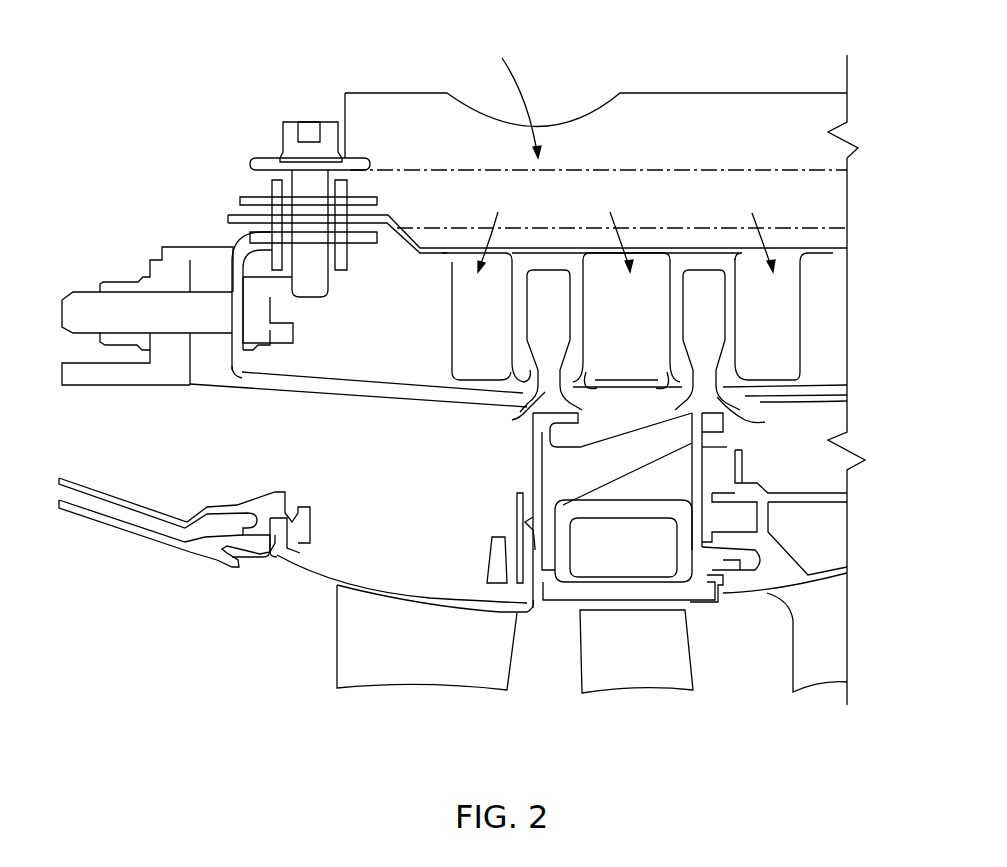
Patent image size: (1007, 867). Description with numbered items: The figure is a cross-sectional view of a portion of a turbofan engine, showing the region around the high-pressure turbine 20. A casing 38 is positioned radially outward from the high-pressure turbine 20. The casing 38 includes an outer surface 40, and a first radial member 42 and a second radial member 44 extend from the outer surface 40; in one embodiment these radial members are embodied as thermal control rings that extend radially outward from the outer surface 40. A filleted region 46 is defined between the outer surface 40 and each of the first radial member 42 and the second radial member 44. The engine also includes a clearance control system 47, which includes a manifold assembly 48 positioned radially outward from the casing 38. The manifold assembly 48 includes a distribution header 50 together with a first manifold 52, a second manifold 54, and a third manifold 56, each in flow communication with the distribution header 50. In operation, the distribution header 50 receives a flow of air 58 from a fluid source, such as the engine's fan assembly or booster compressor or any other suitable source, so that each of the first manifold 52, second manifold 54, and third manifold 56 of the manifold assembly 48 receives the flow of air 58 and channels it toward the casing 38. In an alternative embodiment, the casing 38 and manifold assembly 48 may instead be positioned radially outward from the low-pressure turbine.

The high-pressure turbine 20 is at (355, 711).
The casing 38 is at (300, 383).
The outer surface 40 is at (373, 380).
The first radial member 42 is at (545, 288).
The second radial member 44 is at (703, 288).
The filleted region 46 is at (528, 413).
The clearance control system 47 is at (356, 51).
The manifold assembly 48 is at (745, 51).
The distribution header 50 is at (729, 143).
The first manifold 52 is at (448, 300).
The second manifold 54 is at (583, 326).
The third manifold 56 is at (803, 312).
The flow of air 58 is at (525, 92).